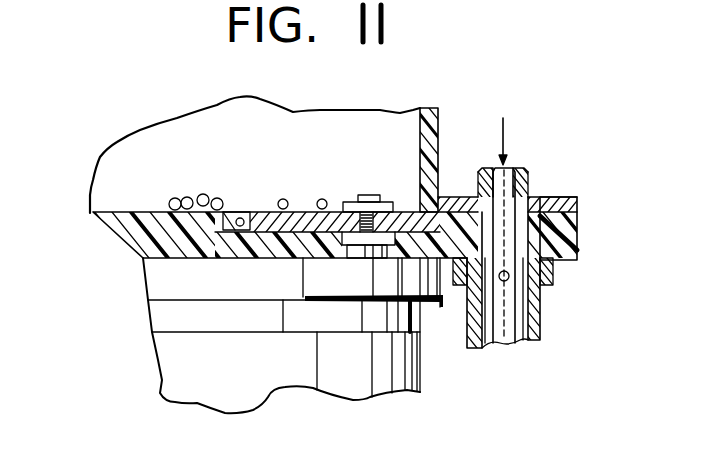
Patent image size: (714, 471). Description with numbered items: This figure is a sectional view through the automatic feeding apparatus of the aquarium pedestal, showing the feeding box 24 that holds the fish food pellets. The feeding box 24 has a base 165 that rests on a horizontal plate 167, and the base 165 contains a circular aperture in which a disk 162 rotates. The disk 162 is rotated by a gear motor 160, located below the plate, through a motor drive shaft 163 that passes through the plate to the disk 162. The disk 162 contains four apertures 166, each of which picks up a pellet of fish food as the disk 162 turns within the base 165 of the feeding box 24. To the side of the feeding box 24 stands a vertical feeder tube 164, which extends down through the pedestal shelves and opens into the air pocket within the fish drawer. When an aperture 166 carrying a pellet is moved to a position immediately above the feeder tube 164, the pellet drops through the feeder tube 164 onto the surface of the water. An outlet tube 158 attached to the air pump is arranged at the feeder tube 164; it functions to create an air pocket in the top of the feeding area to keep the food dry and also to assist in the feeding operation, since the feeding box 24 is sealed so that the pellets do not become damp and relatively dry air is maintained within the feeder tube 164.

The feeding box 24 is at (128, 128).
The outlet tube 158 is at (500, 173).
The gear motor 160 is at (270, 396).
The disk 162 is at (294, 200).
The motor drive shaft 163 is at (372, 259).
The feeder tube 164 is at (540, 320).
The base 165 is at (578, 205).
The apertures 166 is at (233, 267).
The horizontal plate 167 is at (118, 230).